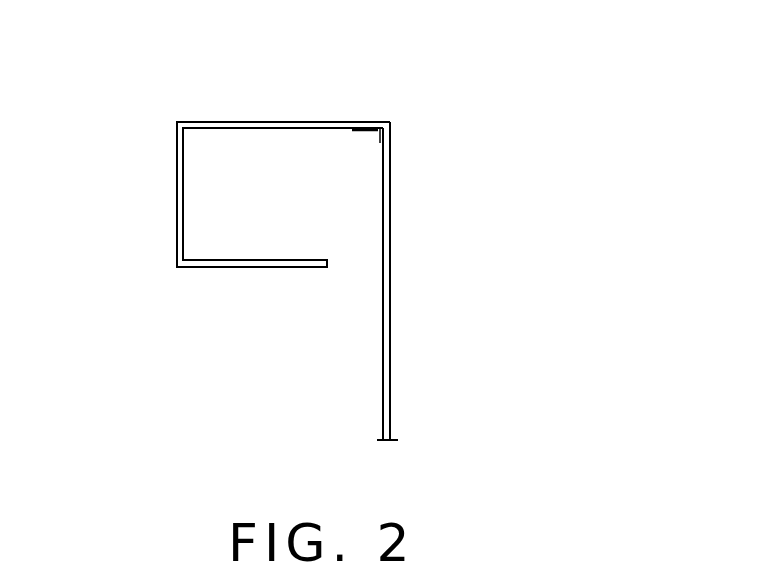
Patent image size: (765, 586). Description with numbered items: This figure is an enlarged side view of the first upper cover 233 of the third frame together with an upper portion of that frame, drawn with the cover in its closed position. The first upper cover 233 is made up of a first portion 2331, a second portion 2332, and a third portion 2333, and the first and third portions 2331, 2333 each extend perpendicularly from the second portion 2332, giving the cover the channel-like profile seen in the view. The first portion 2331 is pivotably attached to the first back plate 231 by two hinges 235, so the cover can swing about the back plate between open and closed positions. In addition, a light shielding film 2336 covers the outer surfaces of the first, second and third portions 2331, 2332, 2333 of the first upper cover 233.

The first back plate 231 is at (380, 265).
The first upper cover 233 is at (297, 44).
The first portion 2331 is at (275, 98).
The second portion 2332 is at (183, 192).
The third portion 2333 is at (323, 259).
The light shielding film 2336 is at (178, 220).
The hinges 235 is at (380, 137).